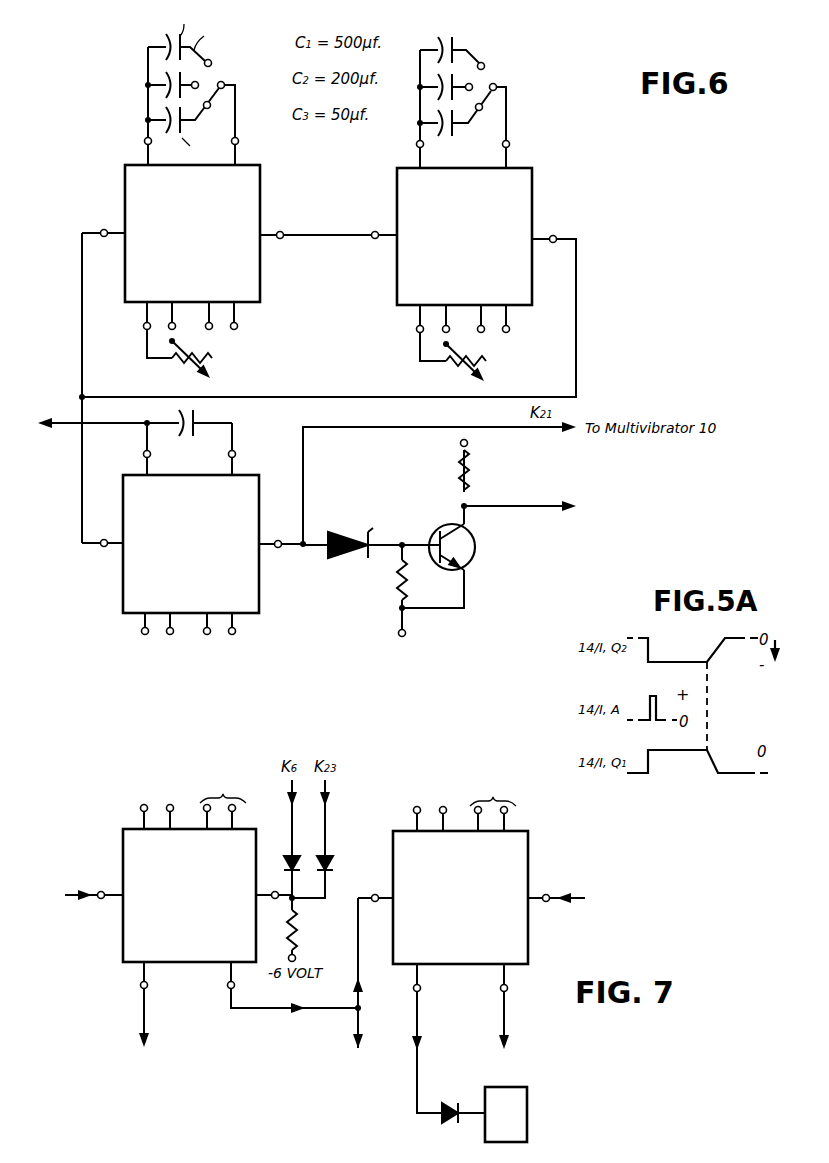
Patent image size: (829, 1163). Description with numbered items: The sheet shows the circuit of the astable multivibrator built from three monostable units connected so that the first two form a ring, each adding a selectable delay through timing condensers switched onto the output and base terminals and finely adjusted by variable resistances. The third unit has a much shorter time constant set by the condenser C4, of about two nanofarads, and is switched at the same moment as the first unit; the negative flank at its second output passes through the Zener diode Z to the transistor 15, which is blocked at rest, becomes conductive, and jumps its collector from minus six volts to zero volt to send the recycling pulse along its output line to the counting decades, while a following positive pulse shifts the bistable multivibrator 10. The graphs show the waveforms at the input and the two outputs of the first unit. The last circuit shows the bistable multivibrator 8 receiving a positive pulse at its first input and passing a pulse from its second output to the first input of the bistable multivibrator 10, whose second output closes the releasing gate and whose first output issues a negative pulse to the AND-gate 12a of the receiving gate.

In FIG. 6, the condenser C4 is at (135, 415).
In FIG. 6, the Zener diode Z is at (352, 533).
In FIG. 6, the transistor 15 is at (476, 546).
In FIG. 7, the bistable multivibrator 8 is at (243, 835).
In FIG. 7, the bistable multivibrator 10 is at (518, 842).
In FIG. 7, the AND-gate 12a is at (527, 1112).